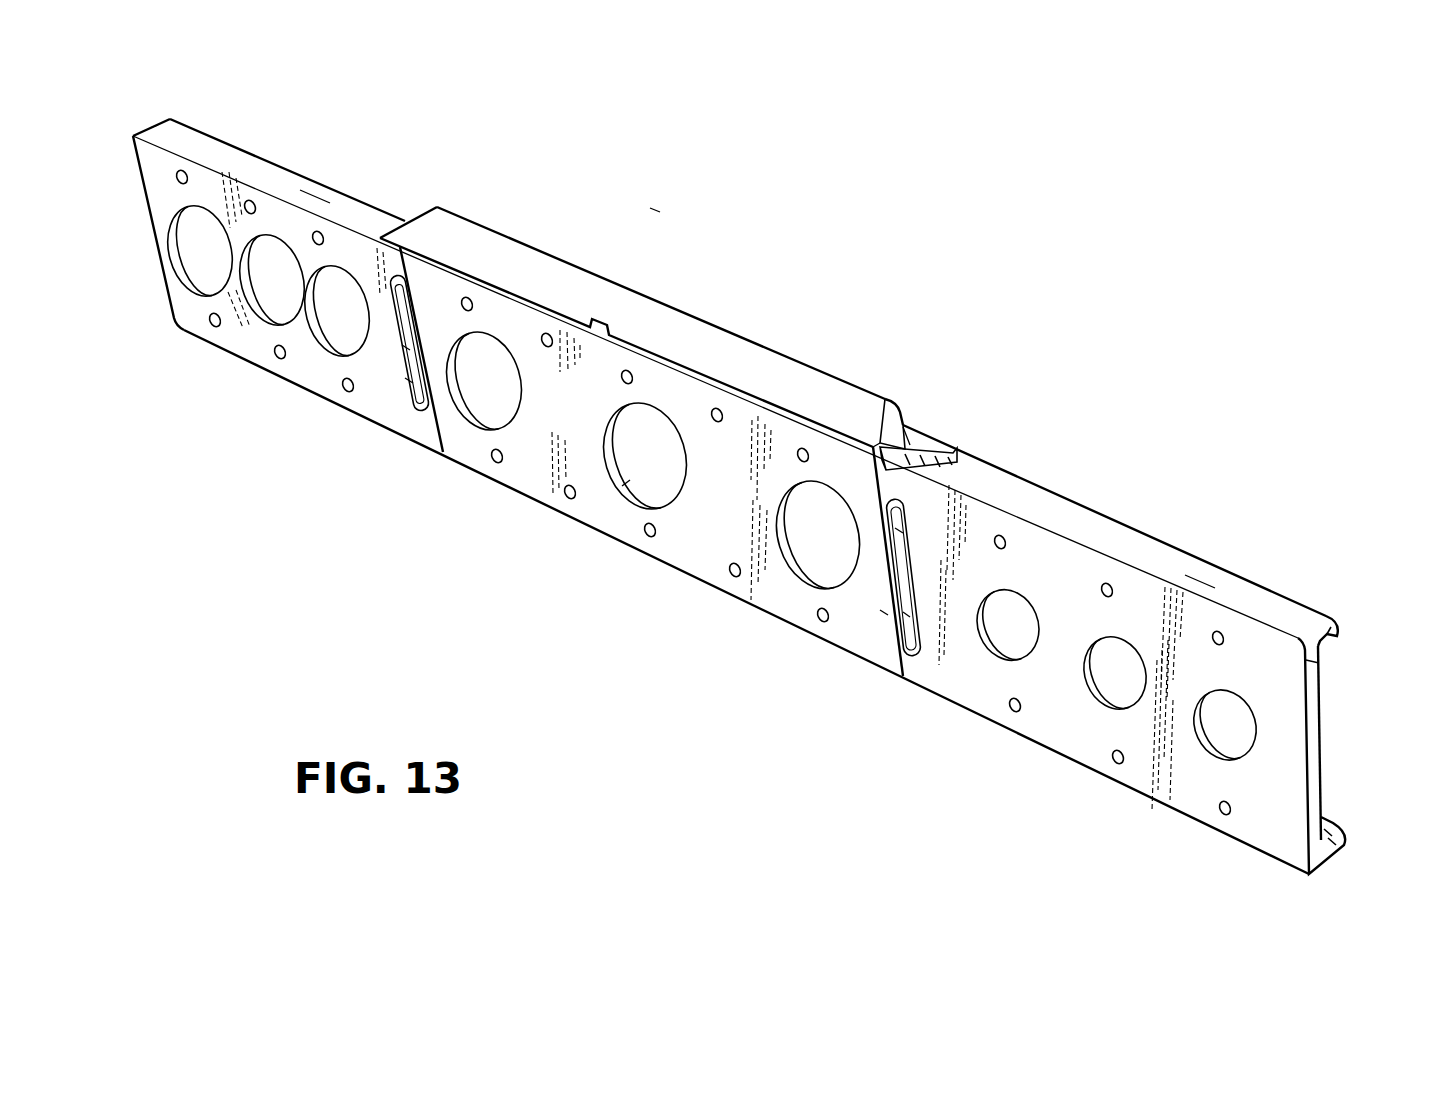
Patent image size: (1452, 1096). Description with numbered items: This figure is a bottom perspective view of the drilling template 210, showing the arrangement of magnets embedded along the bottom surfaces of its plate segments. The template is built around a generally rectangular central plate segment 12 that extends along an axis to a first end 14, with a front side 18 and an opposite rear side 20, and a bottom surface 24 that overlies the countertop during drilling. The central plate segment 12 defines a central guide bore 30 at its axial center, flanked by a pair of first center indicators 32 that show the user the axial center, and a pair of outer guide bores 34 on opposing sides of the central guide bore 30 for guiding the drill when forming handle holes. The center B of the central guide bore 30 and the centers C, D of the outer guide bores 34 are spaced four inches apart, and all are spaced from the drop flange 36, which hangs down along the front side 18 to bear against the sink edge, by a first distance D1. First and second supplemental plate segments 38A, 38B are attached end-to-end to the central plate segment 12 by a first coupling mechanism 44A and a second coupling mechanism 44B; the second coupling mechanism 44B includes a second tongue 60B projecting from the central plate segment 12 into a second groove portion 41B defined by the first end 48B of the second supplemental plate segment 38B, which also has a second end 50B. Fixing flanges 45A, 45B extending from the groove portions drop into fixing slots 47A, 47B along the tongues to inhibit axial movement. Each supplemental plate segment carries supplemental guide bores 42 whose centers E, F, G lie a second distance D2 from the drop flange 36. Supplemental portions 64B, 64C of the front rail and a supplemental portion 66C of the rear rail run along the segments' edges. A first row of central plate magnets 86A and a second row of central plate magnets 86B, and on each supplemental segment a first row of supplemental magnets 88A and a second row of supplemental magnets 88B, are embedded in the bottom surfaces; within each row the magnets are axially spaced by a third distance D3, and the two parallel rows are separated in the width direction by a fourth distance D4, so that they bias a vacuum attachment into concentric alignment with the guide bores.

The central plate segment 12 is at (685, 578).
The first end 14 is at (917, 428).
The front side 18 is at (807, 635).
The rear side 20 is at (793, 373).
The bottom surface 24 is at (472, 455).
The central guide bore 30 is at (627, 482).
The first center indicators 32 is at (603, 330).
The outer guide bores 34 is at (486, 343).
The drop flange 36 is at (438, 257).
The first supplemental plate segment 38A is at (318, 190).
The second supplemental plate segment 38B is at (1202, 575).
The second groove portion 41B is at (897, 463).
The supplemental guide bores 42 is at (190, 286).
The first coupling mechanism 44A is at (423, 423).
The second coupling mechanism 44B is at (914, 660).
The first fixing flange 45A is at (408, 352).
The second fixing flange 45B is at (898, 530).
The first fixing slot 47A is at (410, 380).
The second fixing slot 47B is at (890, 612).
The first end of second supplemental plate segment 48B is at (1317, 747).
The second end of second supplemental plate segment 50B is at (903, 612).
The second tongue 60B is at (899, 421).
The supplemental portion of front rail 64B is at (165, 127).
The supplemental portion of front rail 64C is at (1333, 623).
The supplemental portion of rear rail 66C is at (1341, 840).
The first row of central plate magnets 86A is at (467, 298).
The second row of central plate magnets 86B is at (495, 462).
The first row of supplemental magnets 88A is at (183, 170).
The second row of supplemental magnets 88B is at (215, 327).
The template 210 is at (657, 205).
The center of central guide bore B is at (648, 457).
The center of outer guide bore C is at (818, 538).
The center of outer guide bore D is at (517, 418).
The first distance D1 is at (642, 440).
The second distance D2 is at (337, 305).
The third distance D3 is at (191, 186).
The fourth distance D4 is at (549, 350).
The center of supplemental guide bore E is at (322, 243).
The center of supplemental guide bore F is at (270, 280).
The center of supplemental guide bore G is at (200, 252).